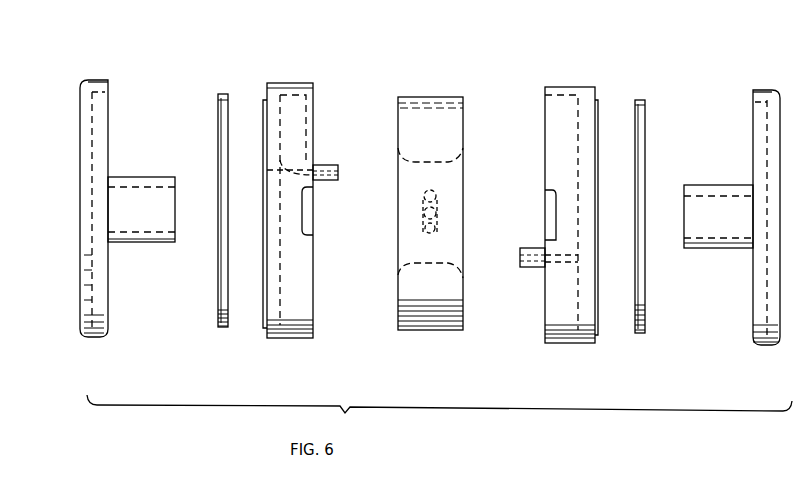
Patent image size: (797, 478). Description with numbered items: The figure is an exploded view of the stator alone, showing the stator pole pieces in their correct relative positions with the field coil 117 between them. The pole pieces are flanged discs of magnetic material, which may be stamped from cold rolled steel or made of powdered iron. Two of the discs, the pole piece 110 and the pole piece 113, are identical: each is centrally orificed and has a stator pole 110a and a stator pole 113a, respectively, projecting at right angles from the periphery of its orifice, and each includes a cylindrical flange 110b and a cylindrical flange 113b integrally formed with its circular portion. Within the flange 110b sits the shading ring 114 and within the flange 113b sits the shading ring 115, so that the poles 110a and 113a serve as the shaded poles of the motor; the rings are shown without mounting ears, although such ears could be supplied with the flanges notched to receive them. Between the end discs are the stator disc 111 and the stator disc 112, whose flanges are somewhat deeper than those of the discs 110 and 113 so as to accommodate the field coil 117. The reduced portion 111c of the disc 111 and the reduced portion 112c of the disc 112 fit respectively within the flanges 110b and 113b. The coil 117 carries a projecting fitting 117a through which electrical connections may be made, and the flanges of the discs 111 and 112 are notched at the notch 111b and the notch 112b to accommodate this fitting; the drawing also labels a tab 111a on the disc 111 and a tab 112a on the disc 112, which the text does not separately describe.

The stator pole piece 110 is at (80, 275).
The stator pole 110a is at (128, 177).
The cylindrical flange 110b is at (92, 80).
The shading ring 114 is at (218, 288).
The stator disc 111 is at (270, 338).
The tab of plate 111 111a is at (332, 172).
The notch 111b is at (312, 209).
The reduced portion 111c is at (265, 325).
The field coil 117 is at (425, 330).
The projecting fitting 117a is at (440, 196).
The stator disc 112 is at (590, 342).
The tab of plate 112 112a is at (520, 258).
The notch 112b is at (550, 193).
The reduced portion 112c is at (596, 336).
The shading ring 115 is at (645, 322).
The stator pole piece 113 is at (765, 345).
The stator pole 113a is at (720, 186).
The cylindrical flange 113b is at (757, 88).